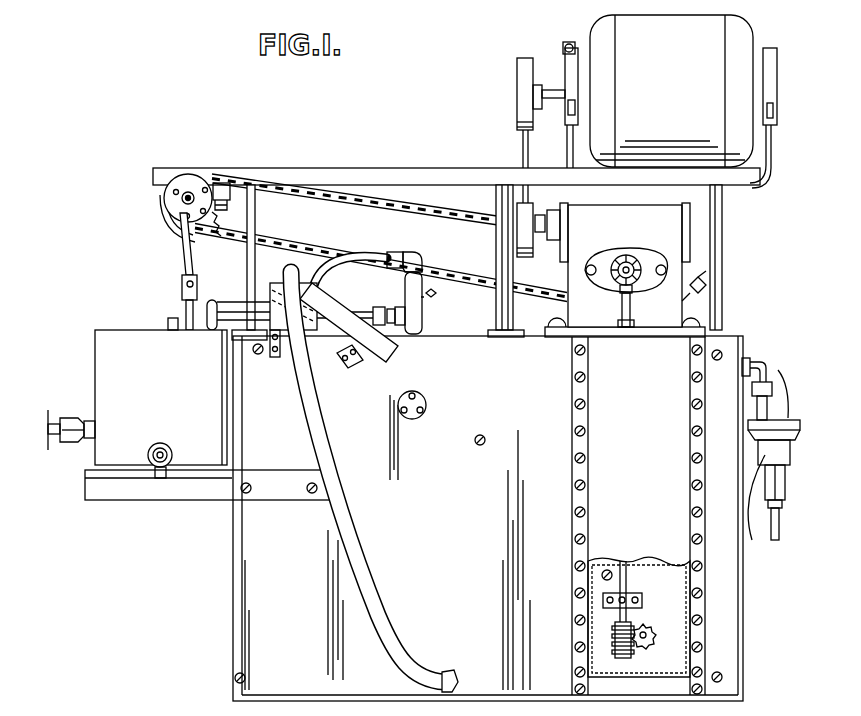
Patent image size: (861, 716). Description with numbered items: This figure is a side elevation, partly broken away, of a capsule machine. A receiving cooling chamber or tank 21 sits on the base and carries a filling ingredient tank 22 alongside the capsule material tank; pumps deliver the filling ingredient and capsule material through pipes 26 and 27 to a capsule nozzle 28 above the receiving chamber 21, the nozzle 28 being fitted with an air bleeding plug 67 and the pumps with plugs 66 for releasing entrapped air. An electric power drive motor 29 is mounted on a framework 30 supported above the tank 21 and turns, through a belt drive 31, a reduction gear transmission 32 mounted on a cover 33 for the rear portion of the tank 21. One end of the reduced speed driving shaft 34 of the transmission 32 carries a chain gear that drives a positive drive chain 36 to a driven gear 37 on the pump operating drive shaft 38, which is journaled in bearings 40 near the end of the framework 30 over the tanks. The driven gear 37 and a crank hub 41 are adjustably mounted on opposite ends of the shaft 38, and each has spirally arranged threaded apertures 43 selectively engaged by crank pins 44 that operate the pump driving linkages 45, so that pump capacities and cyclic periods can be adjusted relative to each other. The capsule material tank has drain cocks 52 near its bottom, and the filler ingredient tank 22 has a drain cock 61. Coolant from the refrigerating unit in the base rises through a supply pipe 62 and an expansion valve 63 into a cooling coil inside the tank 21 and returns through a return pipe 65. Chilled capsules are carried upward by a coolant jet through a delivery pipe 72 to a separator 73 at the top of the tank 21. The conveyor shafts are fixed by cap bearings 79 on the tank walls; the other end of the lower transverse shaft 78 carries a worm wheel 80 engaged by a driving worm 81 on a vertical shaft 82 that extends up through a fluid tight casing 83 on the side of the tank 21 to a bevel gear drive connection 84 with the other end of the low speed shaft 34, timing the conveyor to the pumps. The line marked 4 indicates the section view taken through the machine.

The section line 4- 4 is at (360, 340).
The receiving cooling chamber or tank 21 is at (237, 570).
The filling ingredient tank 22 is at (98, 357).
The pipe 26 is at (365, 336).
The pipe 27 is at (330, 262).
The capsule nozzle 28 is at (421, 318).
The electric power drive motor 29 is at (740, 25).
The framework 30 is at (463, 174).
The belt drive 31 is at (527, 162).
The reduction gear transmission 32 is at (597, 214).
The cover 33 is at (533, 333).
The reduced speed driving shaft 34 is at (628, 260).
The positive drive chain 36 is at (392, 204).
The driven gear 37 is at (222, 226).
The pump operating drive shaft 38 is at (190, 192).
The bearings 40 is at (222, 187).
The crank hub 41 is at (178, 184).
The threaded apertures 43 is at (200, 190).
The crank pins 44 is at (172, 194).
The pump driving linkages 45 is at (178, 258).
The drain cocks 52 is at (67, 420).
The drain cock 61 is at (160, 443).
The supply pipe 62 is at (780, 537).
The expansion valve 63 is at (764, 513).
The return pipe 65 is at (770, 384).
The plugs 66 is at (170, 321).
The air bleeding plug 67 is at (433, 299).
The delivery pipe 72 is at (393, 642).
The separator 73 is at (300, 301).
The lower transverse shaft 78 is at (646, 632).
The cap bearings 79 is at (426, 401).
The worm wheel 80 is at (648, 645).
The driving worm 81 is at (615, 641).
The vertical shaft 82 is at (635, 591).
The fluid tight casing 83 is at (597, 545).
The bevel gear drive connection 84 is at (612, 278).